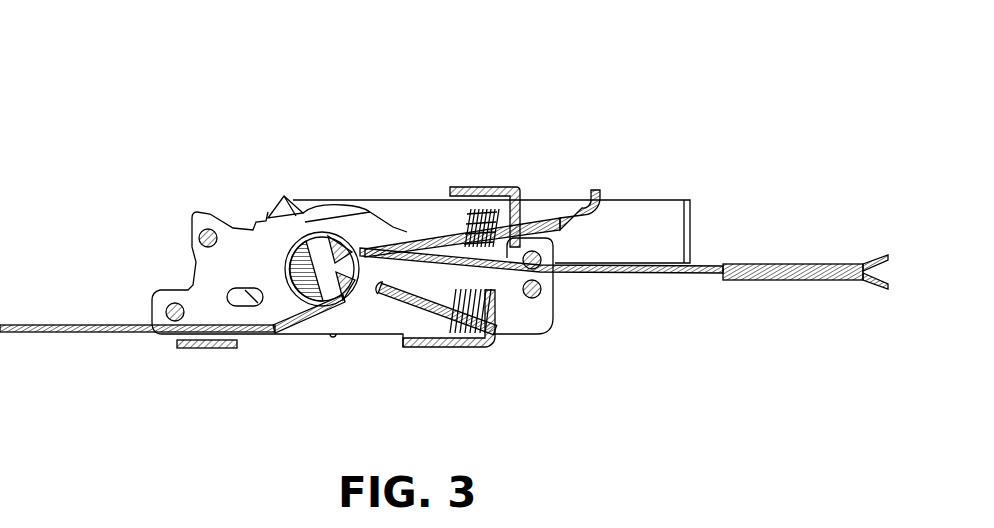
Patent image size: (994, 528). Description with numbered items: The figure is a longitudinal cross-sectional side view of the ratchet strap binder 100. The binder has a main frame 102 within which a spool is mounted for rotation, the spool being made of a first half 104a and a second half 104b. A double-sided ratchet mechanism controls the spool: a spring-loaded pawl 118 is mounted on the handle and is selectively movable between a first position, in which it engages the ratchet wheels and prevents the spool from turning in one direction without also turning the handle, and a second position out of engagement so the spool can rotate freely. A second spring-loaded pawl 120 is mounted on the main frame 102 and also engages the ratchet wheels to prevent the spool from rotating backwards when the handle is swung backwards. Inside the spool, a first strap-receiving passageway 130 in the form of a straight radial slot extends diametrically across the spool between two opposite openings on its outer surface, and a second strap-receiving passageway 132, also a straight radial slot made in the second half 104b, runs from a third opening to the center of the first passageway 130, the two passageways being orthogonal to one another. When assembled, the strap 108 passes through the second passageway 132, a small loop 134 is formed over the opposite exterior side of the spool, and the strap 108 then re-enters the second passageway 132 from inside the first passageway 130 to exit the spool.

The ratchet strap binder 100 is at (216, 110).
The main frame 102 is at (197, 290).
The first half of the spool 104a is at (293, 263).
The second half of the spool 104b is at (348, 242).
The strap 108 is at (643, 273).
The spring-loaded pawl 118 is at (513, 222).
The second spring-loaded pawl 120 is at (408, 292).
The first strap-receiving passageway 130 is at (323, 240).
The second strap-receiving passageway 132 is at (350, 262).
The small loop 134 is at (297, 293).